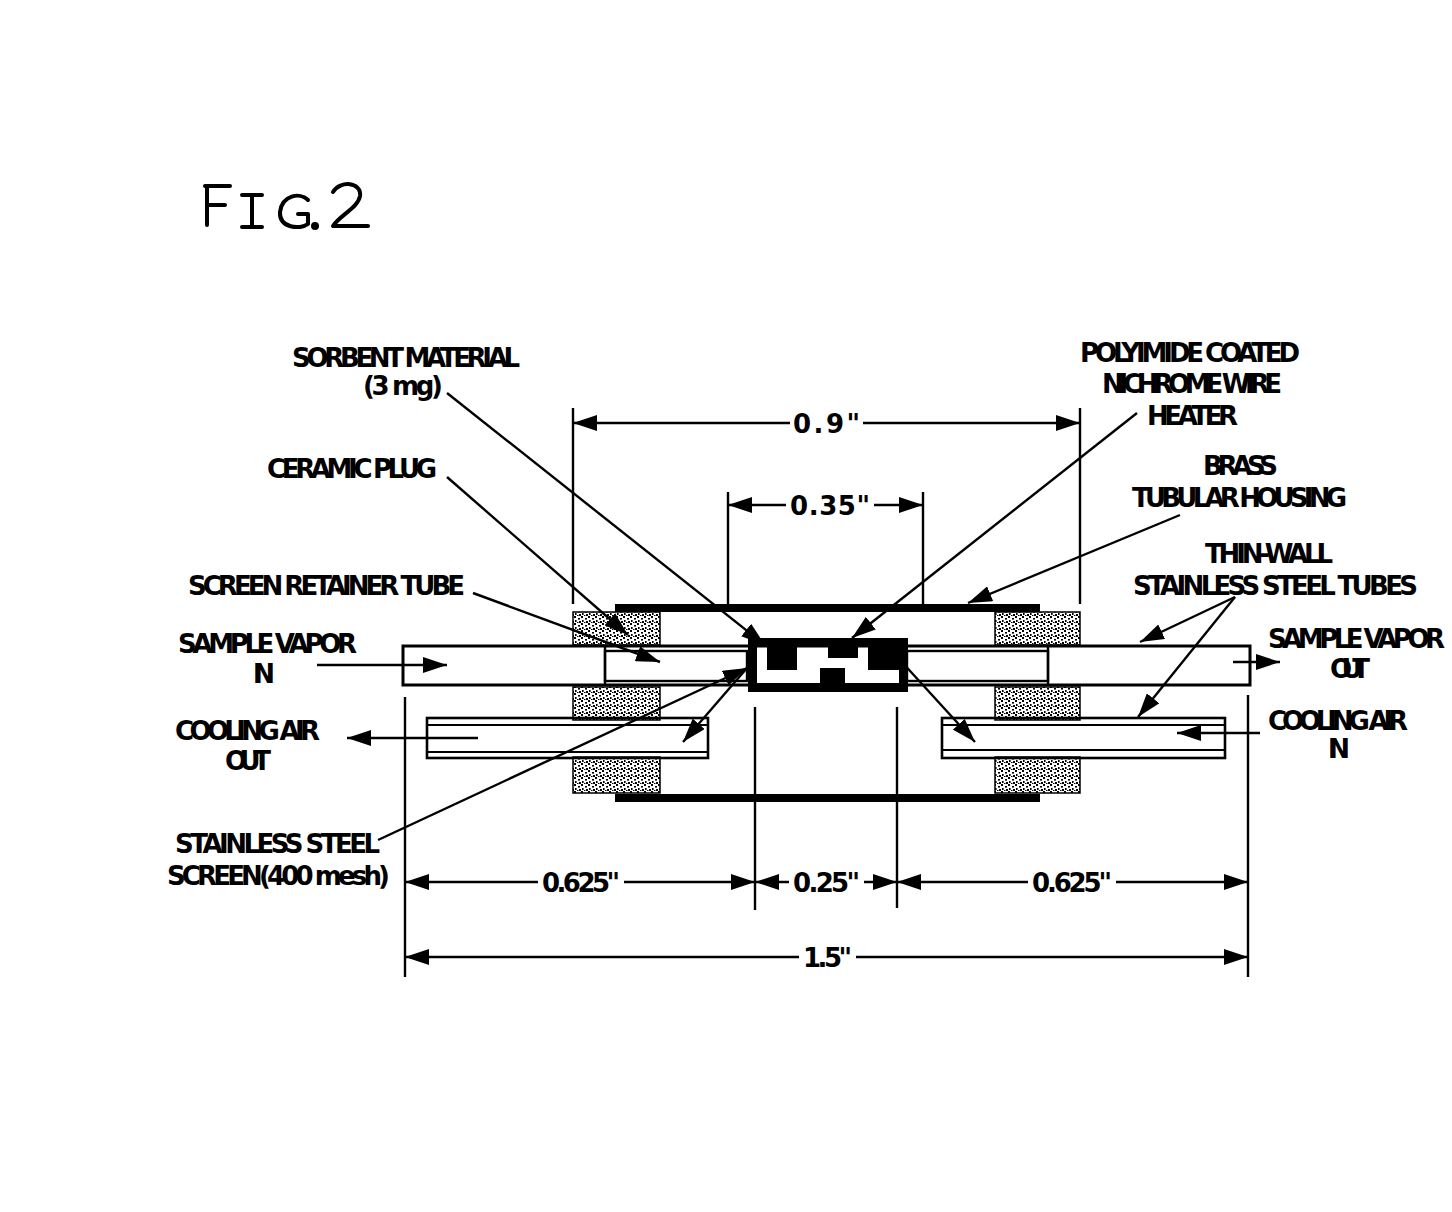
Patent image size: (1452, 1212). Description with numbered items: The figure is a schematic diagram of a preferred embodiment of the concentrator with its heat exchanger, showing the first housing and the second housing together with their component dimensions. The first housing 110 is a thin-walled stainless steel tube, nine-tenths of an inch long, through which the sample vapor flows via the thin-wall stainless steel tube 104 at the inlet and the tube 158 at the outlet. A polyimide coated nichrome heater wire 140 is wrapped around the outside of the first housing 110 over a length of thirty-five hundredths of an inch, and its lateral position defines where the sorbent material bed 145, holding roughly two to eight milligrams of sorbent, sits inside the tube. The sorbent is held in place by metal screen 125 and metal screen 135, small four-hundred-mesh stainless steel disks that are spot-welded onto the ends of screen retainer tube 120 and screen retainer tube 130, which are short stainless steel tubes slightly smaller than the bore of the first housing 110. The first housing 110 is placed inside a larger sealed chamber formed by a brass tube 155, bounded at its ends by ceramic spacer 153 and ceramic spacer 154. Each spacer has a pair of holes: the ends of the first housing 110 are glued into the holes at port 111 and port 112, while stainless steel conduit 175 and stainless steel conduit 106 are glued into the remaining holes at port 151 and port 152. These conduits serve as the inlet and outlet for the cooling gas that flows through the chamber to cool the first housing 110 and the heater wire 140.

The thin-wall stainless steel inlet tube (sample vapor in) 104 is at (473, 645).
The stainless steel conduit 106 is at (462, 760).
The first housing 110 is at (598, 606).
The port 111 is at (570, 614).
The port 112 is at (1086, 623).
The screen retainer tube 120 is at (668, 660).
The metal screen 125 is at (752, 606).
The screen retainer tube 130 is at (1028, 606).
The metal screen 135 is at (897, 606).
The polyimide coated nichrome heater wire 140 is at (862, 692).
The sorbent material bed 145 is at (808, 670).
The port 151 is at (567, 762).
The port 152 is at (1083, 758).
The ceramic spacer 153 is at (593, 795).
The ceramic spacer 154 is at (1067, 794).
The brass tube 155 is at (973, 800).
The thin-wall stainless steel outlet tube (sample vapor out) 158 is at (1123, 640).
The stainless steel conduit 175 is at (1190, 758).